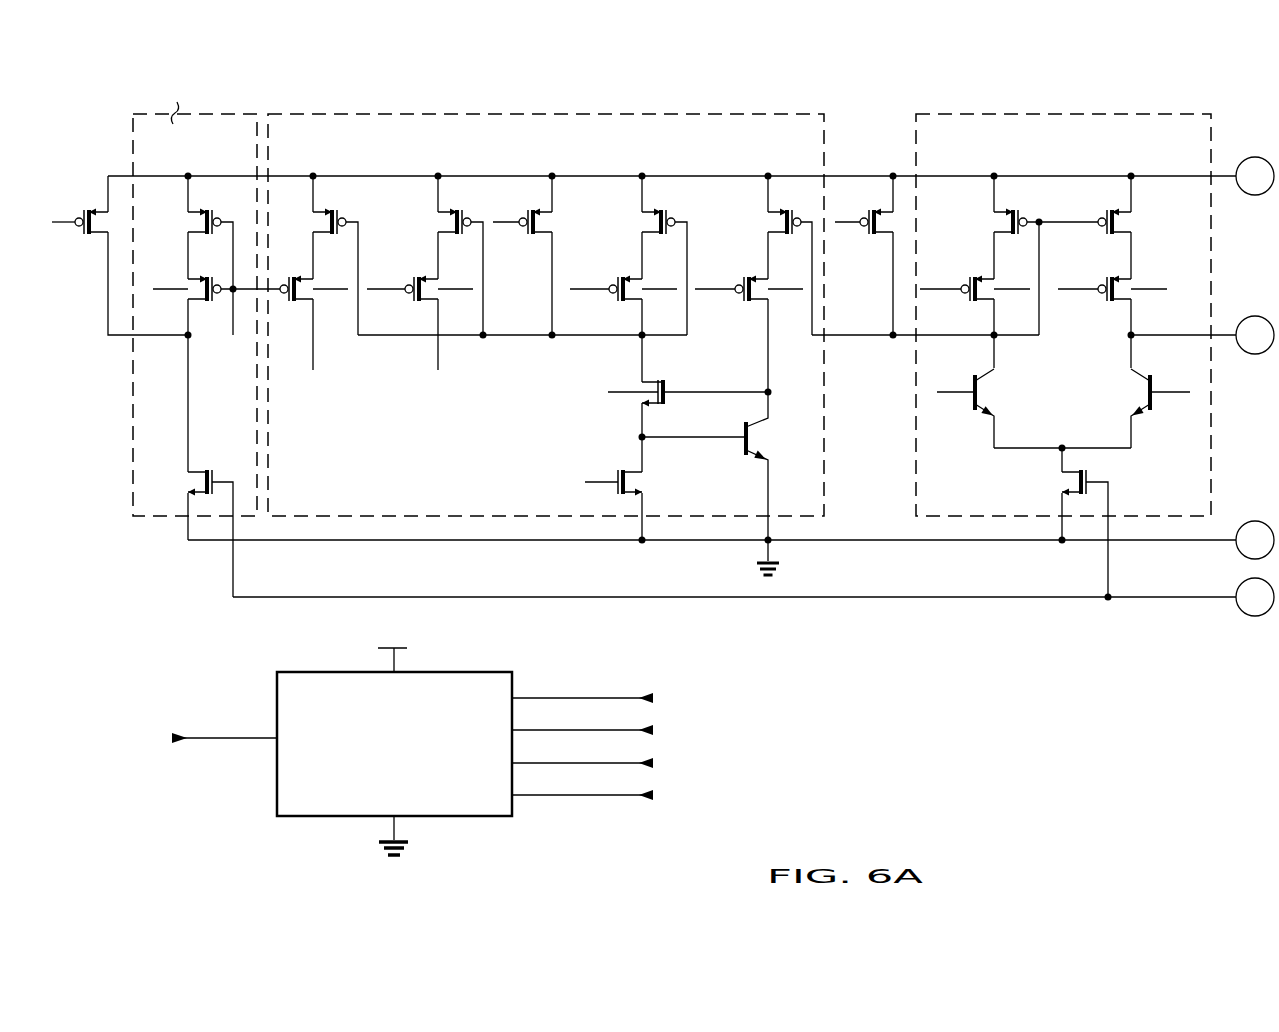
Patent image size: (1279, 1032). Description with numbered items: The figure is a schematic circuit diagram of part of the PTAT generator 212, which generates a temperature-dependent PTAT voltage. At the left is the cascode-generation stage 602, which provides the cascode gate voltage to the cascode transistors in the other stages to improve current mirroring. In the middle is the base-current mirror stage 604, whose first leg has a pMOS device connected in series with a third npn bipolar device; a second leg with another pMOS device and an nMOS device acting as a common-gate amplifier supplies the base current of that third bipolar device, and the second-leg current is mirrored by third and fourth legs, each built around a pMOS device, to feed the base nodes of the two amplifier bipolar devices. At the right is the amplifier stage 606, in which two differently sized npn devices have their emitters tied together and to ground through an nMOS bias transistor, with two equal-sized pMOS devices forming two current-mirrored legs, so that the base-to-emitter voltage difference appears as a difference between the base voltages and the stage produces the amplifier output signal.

The PTAT generator 212 is at (1017, 867).
The cascode-generation stage 602 is at (133, 142).
The base-current mirror stage 604 is at (724, 114).
The amplifier stage 606 is at (1151, 114).